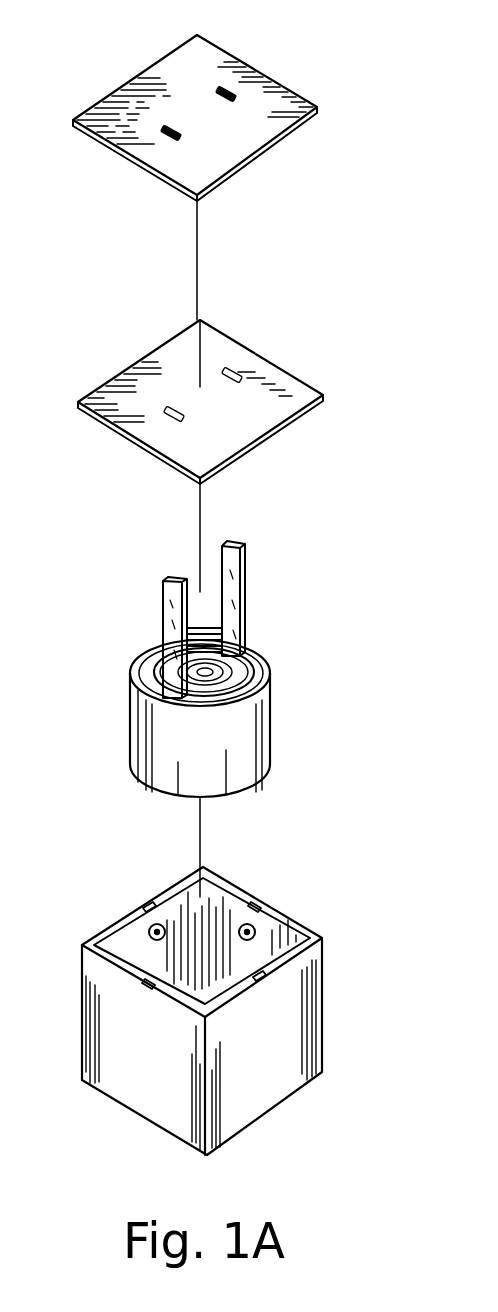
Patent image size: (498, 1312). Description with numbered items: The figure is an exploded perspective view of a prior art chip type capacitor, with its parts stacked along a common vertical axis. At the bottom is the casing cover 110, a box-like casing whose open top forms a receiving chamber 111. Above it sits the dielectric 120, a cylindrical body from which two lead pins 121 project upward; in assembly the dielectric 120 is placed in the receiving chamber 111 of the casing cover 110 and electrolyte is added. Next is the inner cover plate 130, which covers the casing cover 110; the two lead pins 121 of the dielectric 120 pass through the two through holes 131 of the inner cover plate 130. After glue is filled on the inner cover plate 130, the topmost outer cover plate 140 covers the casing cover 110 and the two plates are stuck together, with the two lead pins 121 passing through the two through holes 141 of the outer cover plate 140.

The casing cover 110 is at (318, 1006).
The receiving chamber 111 is at (267, 932).
The dielectric 120 is at (263, 723).
The lead pins 121 is at (246, 592).
The inner cover plate 130 is at (305, 394).
The through holes 131 is at (235, 371).
The outer cover plate 140 is at (302, 107).
The through holes 141 is at (234, 92).